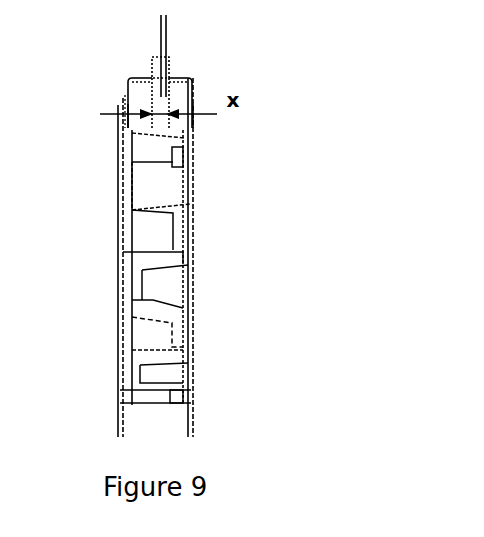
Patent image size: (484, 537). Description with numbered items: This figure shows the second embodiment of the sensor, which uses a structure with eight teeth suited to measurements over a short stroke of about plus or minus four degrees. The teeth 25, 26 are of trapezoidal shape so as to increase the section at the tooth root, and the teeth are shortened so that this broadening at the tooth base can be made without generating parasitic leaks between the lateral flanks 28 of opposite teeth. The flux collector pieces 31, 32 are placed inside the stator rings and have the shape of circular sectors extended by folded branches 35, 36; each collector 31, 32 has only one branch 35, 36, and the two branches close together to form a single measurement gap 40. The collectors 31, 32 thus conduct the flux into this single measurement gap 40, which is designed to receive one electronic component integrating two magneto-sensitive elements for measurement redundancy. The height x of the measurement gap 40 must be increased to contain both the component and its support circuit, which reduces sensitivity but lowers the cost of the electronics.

The tooth 25 is at (148, 236).
The tooth 26 is at (172, 292).
The lateral flank 28 is at (158, 160).
The flux collector piece 31 is at (130, 90).
The flux collector piece 32 is at (193, 88).
The folded branch 35 is at (140, 77).
The folded branch 36 is at (178, 75).
The measurement gap 40 is at (158, 78).